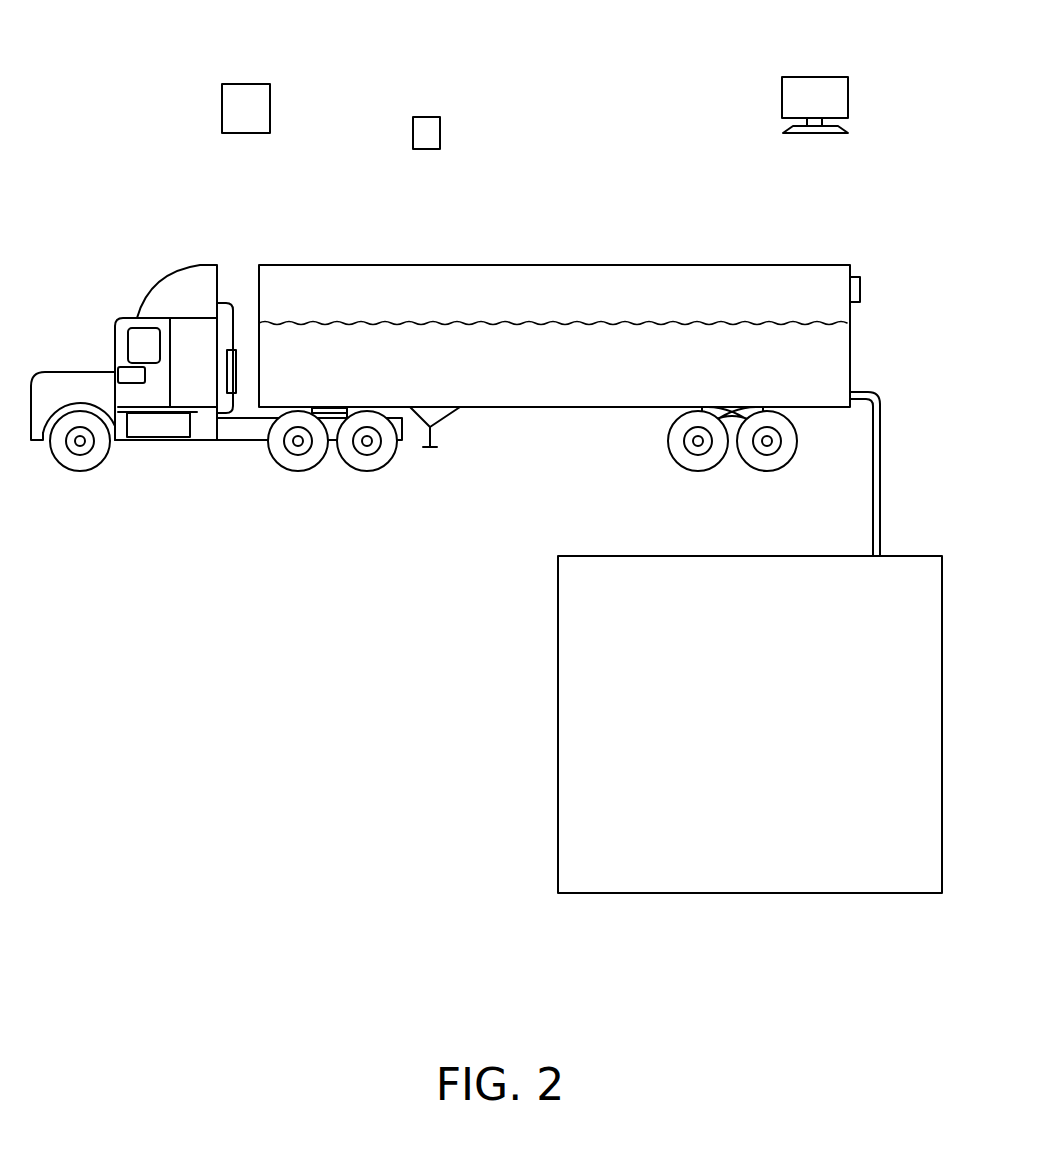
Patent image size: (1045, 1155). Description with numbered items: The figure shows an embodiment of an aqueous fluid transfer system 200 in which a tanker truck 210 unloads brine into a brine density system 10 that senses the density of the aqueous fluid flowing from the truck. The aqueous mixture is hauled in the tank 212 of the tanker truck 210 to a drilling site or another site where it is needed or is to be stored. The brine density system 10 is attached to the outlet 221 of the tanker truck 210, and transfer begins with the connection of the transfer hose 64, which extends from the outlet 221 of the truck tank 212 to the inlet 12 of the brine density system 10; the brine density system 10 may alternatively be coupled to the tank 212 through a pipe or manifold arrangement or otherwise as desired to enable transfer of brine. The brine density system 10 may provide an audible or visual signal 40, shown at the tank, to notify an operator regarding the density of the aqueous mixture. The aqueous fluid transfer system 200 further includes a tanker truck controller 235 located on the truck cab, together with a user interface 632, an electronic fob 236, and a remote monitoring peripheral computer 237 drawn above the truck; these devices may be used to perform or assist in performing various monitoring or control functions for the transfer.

The aqueous fluid transfer system 200 is at (114, 185).
The tanker truck 210 is at (440, 339).
The tank 212 is at (349, 265).
The tanker truck controller 235 is at (128, 373).
The audible or visual signal 40 is at (862, 286).
The outlet 221 is at (852, 387).
The transfer hose 64 is at (882, 410).
The inlet 12 is at (880, 555).
The brine density system 10 is at (724, 740).
The user interface 632 is at (252, 84).
The electronic fob 236 is at (430, 117).
The remote monitoring peripheral computer 237 is at (812, 77).